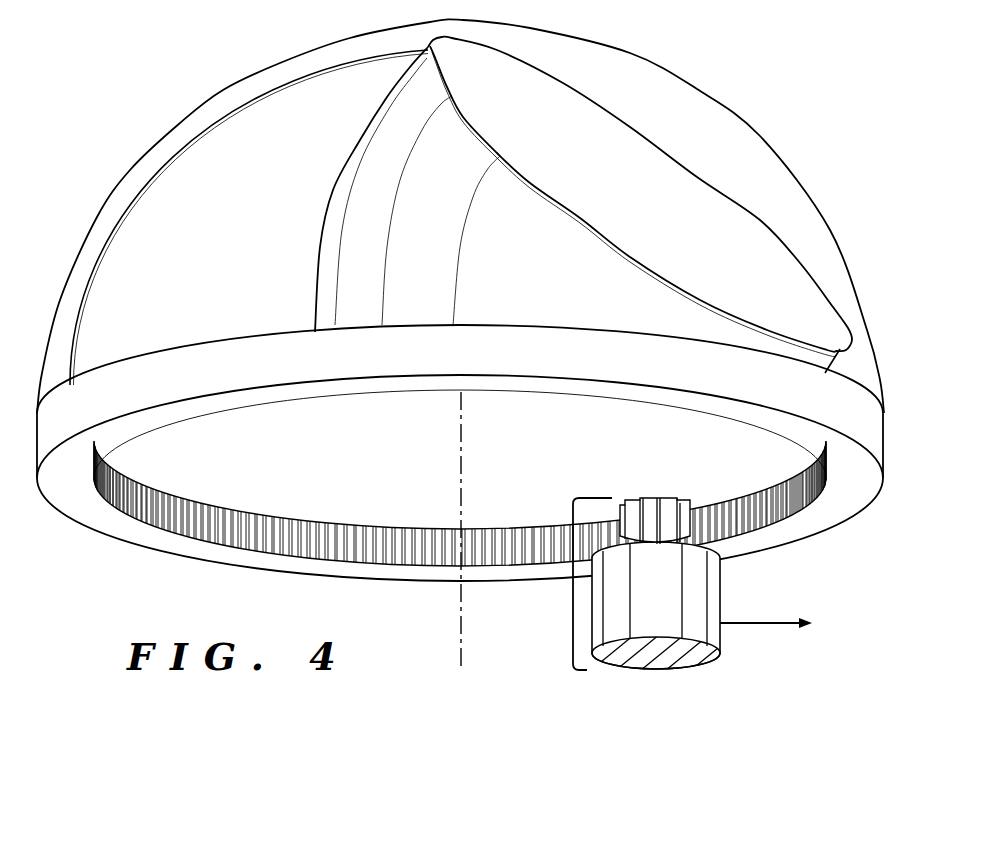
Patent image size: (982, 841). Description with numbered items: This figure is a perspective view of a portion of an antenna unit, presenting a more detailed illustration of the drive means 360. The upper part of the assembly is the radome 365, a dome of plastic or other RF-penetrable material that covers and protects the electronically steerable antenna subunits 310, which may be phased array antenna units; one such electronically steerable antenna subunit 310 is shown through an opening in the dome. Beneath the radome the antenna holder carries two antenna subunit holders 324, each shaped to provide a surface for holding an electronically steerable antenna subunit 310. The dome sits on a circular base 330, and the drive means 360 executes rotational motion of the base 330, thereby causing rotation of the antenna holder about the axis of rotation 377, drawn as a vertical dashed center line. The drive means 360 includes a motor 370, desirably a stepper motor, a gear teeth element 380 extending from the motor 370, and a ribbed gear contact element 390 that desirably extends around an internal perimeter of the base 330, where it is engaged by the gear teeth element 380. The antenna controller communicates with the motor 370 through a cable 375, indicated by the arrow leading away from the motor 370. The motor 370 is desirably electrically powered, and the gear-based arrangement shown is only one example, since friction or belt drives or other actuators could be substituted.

The radome 365 is at (298, 57).
The antenna subunit holder 324 is at (218, 244).
The electronically steerable antenna subunit 310 is at (615, 207).
The base 330 is at (575, 329).
The ribbed gear contact element 390 is at (749, 506).
The gear teeth element 380 is at (664, 498).
The motor 370 is at (636, 607).
The drive means 360 is at (573, 617).
The cable 375 is at (772, 623).
The axis of rotation 377 is at (461, 622).